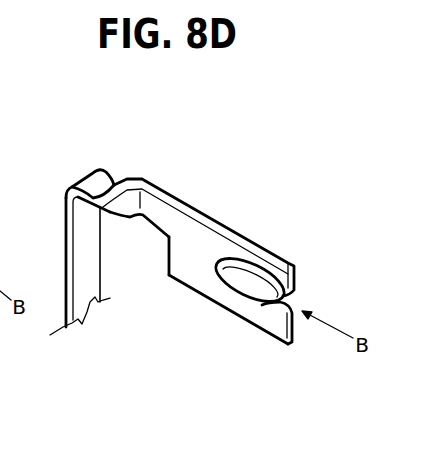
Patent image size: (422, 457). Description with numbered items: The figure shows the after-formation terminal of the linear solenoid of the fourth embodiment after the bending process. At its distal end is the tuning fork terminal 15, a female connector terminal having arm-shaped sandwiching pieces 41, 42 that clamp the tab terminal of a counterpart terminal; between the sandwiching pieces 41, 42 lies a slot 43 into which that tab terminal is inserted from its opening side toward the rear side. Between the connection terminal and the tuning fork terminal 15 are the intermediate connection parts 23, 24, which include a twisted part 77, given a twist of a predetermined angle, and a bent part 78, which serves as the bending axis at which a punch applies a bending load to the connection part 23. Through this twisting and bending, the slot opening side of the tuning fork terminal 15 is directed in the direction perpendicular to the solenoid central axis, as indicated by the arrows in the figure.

The tuning fork terminal 15 is at (168, 398).
The connection part 23 is at (64, 287).
The connection part 24 is at (160, 207).
The sandwiching piece 41 is at (251, 296).
The sandwiching piece 42 is at (278, 321).
The slot 43 is at (226, 284).
The twisted part 77 is at (118, 222).
The bent part 78 is at (84, 180).